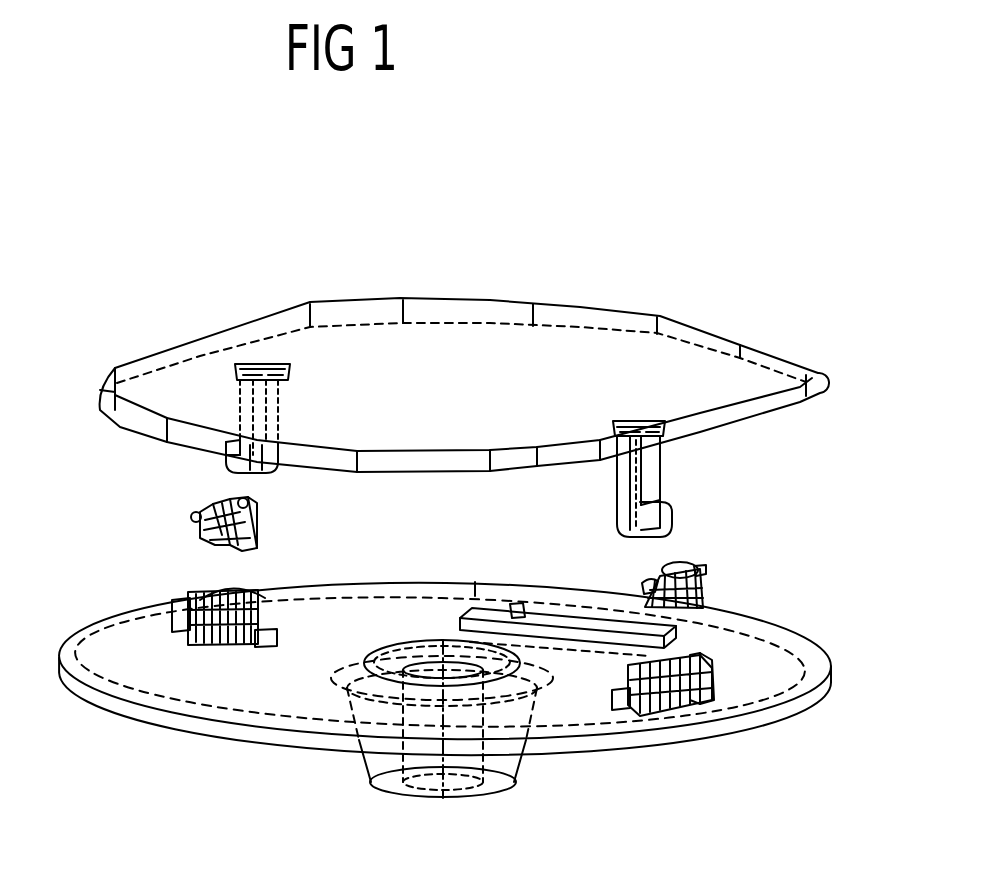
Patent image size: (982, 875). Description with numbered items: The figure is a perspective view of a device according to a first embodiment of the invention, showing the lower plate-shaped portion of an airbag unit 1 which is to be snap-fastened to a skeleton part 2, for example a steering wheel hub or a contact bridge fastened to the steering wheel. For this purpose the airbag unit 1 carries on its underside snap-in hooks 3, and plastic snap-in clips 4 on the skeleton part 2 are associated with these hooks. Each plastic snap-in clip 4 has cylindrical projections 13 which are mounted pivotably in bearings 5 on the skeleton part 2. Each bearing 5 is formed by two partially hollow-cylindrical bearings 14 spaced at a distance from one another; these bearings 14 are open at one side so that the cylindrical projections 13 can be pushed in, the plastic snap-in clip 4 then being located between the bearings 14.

The airbag unit 1 is at (690, 328).
The skeleton part 2 is at (733, 697).
The snap-in hooks 3 is at (233, 460).
The plastic snap-in clips 4 is at (205, 540).
The bearings 5 is at (174, 620).
The cylindrical projections 13 is at (647, 582).
The partially hollow-cylindrical bearings 14 is at (712, 660).